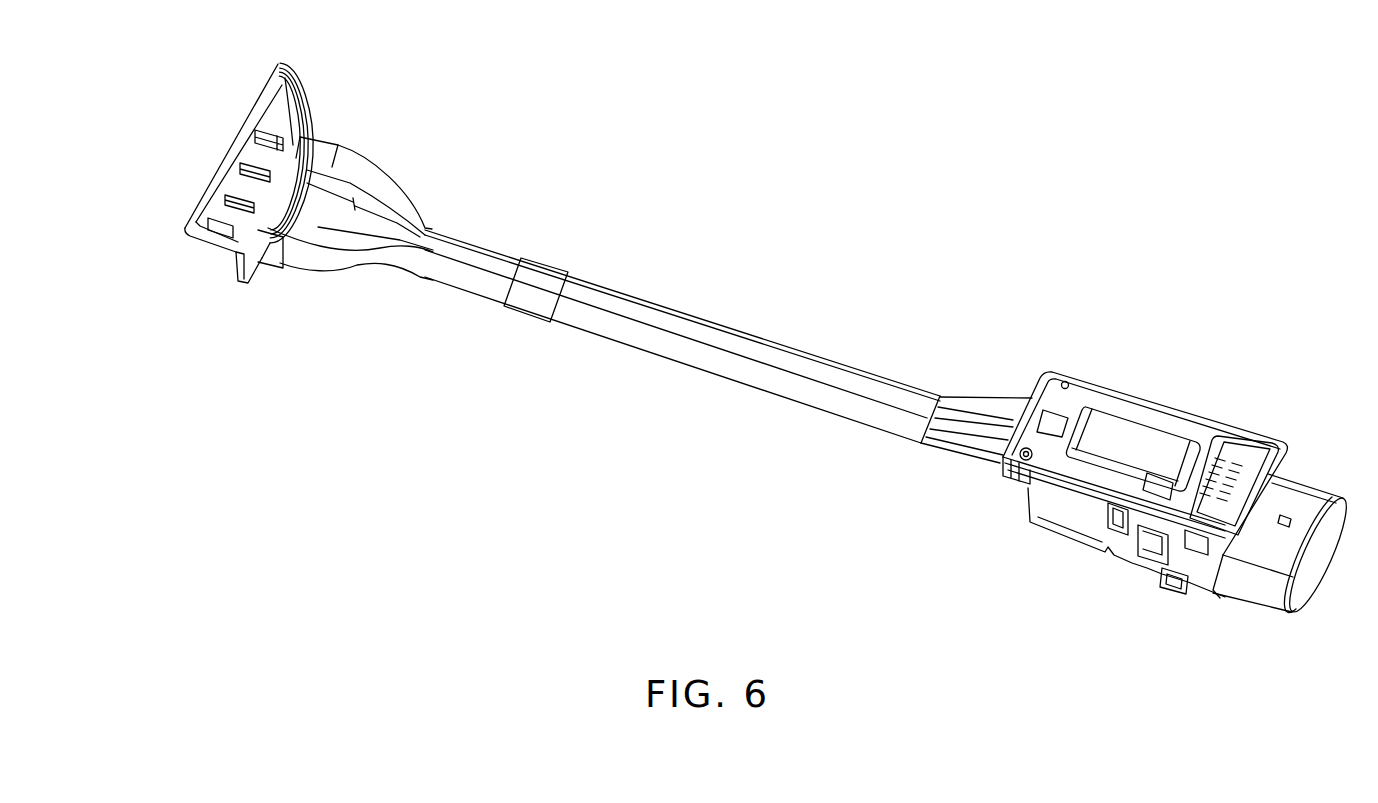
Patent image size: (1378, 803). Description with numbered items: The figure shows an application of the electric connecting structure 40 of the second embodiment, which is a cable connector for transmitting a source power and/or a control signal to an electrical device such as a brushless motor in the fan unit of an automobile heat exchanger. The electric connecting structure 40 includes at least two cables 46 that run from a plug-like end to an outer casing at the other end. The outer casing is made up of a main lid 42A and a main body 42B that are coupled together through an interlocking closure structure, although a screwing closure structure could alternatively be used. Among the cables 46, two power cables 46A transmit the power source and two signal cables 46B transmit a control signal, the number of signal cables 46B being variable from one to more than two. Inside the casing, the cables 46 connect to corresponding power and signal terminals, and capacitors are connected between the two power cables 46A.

The electric connecting structure 40 is at (1179, 438).
The main lid 42A is at (1195, 430).
The main body 42B is at (1062, 512).
The cables 46 is at (650, 304).
The power cables 46A is at (365, 263).
The signal cables 46B is at (330, 227).